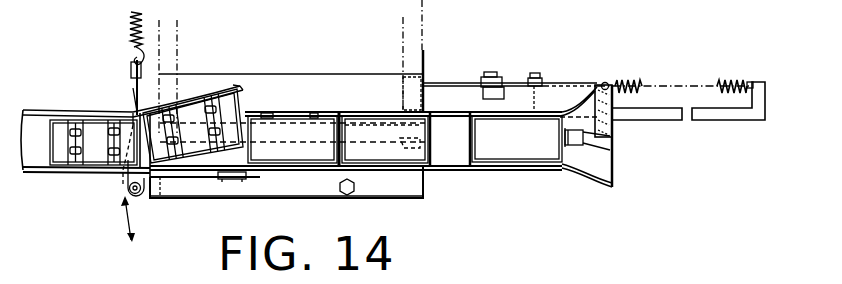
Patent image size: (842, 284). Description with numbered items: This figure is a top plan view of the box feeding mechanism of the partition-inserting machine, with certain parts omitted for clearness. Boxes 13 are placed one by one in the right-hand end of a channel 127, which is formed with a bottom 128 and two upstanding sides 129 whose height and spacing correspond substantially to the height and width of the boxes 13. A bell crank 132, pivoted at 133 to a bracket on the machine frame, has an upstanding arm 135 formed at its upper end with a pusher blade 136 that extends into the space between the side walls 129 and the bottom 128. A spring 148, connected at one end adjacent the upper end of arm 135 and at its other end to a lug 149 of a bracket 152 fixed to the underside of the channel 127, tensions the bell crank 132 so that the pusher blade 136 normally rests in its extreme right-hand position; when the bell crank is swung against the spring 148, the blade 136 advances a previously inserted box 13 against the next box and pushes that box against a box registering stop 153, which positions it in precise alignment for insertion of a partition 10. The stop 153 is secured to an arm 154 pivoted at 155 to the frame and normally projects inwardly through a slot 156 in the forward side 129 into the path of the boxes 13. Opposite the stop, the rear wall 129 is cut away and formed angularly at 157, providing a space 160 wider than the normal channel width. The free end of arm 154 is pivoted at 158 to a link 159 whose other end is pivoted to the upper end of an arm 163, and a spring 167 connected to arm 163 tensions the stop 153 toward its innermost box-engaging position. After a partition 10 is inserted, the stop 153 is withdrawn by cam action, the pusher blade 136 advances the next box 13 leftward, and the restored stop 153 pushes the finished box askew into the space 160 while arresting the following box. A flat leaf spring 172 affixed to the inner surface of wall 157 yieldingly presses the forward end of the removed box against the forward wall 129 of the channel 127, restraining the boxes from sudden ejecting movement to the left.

The box partition 10 is at (112, 155).
The box 13 is at (47, 137).
The channel 127 is at (483, 223).
The bottom 128 is at (445, 130).
The upstanding side 129 is at (457, 110).
The bell crank 132 is at (561, 77).
The pivot 133 is at (527, 78).
The upstanding arm 135 is at (573, 87).
The pusher blade 136 is at (578, 140).
The spring 148 is at (635, 70).
The lug 149 is at (770, 63).
The bracket 152 is at (650, 117).
The box registering stop 153 is at (225, 183).
The arm 154 is at (200, 188).
The pivot 155 is at (352, 196).
The slot 156 is at (245, 175).
The angular wall portion 157 is at (219, 90).
The pivot 158 is at (128, 188).
The link 159 is at (135, 88).
The space 160 is at (243, 100).
The arm 163 is at (127, 70).
The spring 167 is at (132, 40).
The flat leaf spring 172 is at (133, 114).